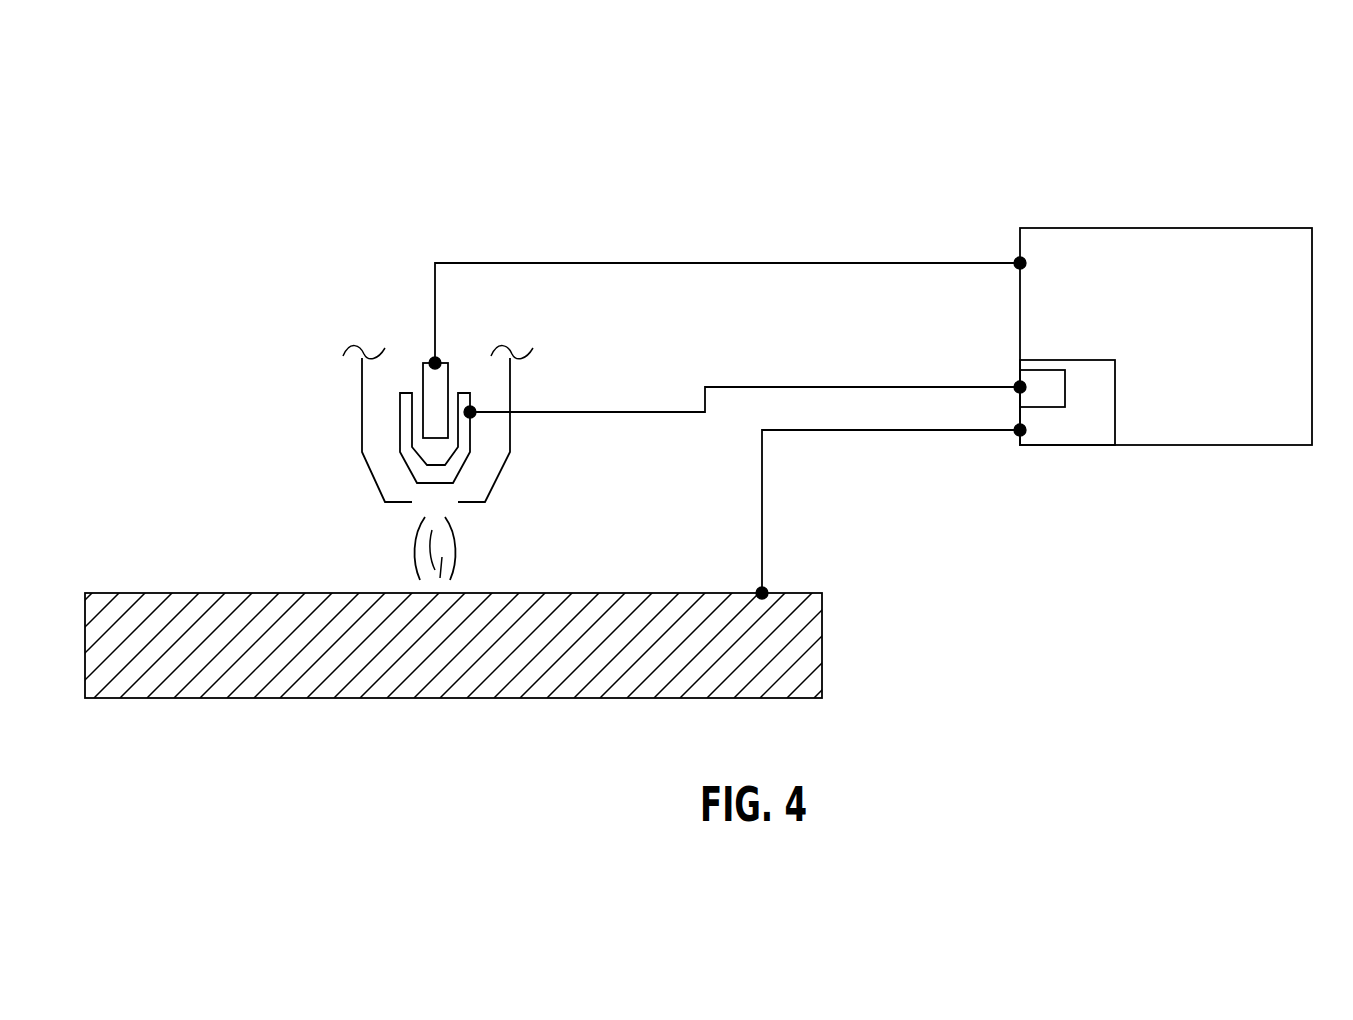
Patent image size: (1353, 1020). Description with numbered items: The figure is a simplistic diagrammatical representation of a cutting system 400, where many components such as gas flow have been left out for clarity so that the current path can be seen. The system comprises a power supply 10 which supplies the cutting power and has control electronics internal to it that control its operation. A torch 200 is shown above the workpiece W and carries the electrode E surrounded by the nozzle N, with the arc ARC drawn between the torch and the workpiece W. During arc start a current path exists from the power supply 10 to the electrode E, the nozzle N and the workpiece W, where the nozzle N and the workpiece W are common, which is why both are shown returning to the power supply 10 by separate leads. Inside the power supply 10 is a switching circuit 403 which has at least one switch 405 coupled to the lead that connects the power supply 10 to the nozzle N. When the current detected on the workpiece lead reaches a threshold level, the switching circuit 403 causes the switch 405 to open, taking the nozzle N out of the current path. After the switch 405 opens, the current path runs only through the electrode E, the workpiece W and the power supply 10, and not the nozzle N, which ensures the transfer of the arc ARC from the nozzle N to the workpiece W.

The cutting system 400 is at (745, 158).
The power supply 10 is at (1182, 217).
The switching circuit 403 is at (1083, 416).
The switch 405 is at (1037, 397).
The welding torch 200 is at (340, 328).
The nozzle N is at (463, 462).
The electrode E is at (423, 372).
The welding arc ARC is at (455, 552).
The workpiece W is at (823, 638).